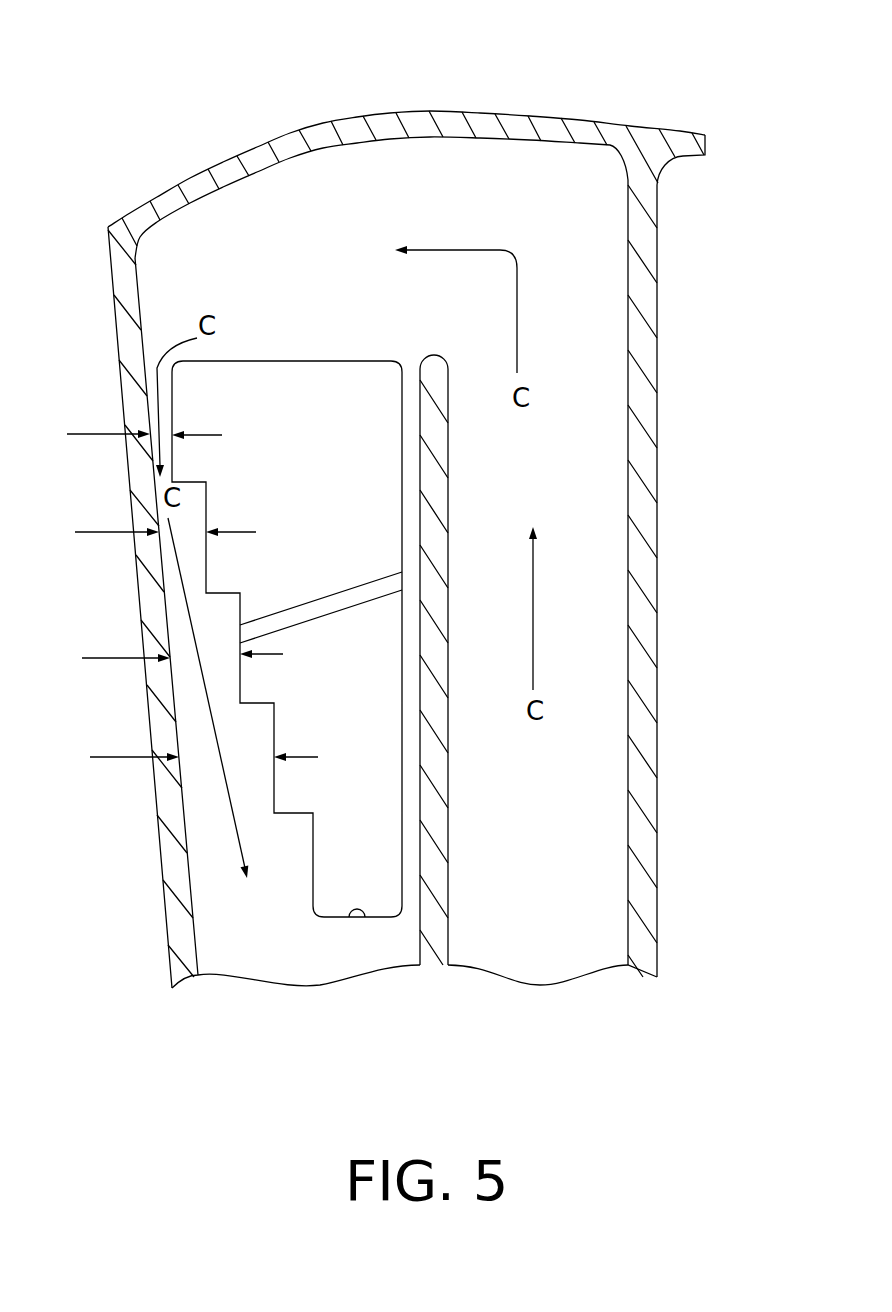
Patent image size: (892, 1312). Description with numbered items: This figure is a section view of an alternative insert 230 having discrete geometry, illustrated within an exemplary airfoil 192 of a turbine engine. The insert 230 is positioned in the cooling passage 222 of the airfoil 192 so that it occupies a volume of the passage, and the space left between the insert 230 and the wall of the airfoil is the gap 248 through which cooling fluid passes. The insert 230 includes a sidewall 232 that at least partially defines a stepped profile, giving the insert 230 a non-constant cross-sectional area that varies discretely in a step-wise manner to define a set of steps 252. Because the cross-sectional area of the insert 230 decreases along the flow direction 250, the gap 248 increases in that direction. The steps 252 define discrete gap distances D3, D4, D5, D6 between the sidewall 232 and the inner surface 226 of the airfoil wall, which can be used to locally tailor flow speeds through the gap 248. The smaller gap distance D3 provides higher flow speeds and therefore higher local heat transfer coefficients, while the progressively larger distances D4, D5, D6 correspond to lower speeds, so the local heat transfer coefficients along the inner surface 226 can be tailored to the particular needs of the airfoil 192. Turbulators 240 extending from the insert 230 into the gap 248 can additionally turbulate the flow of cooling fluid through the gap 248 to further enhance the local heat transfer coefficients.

The airfoil 192 is at (152, 51).
The cooling passage 222 is at (272, 948).
The inner surface 226 is at (140, 305).
The insert 230 is at (340, 355).
The sidewall 232 is at (180, 453).
The turbulators 240 is at (312, 598).
The gap 248 is at (168, 614).
The flow direction 250 is at (237, 822).
The steps 252 is at (173, 400).
The gap distance D3 is at (90, 436).
The gap distance D4 is at (100, 534).
The gap distance D5 is at (96, 660).
The gap distance D6 is at (115, 755).